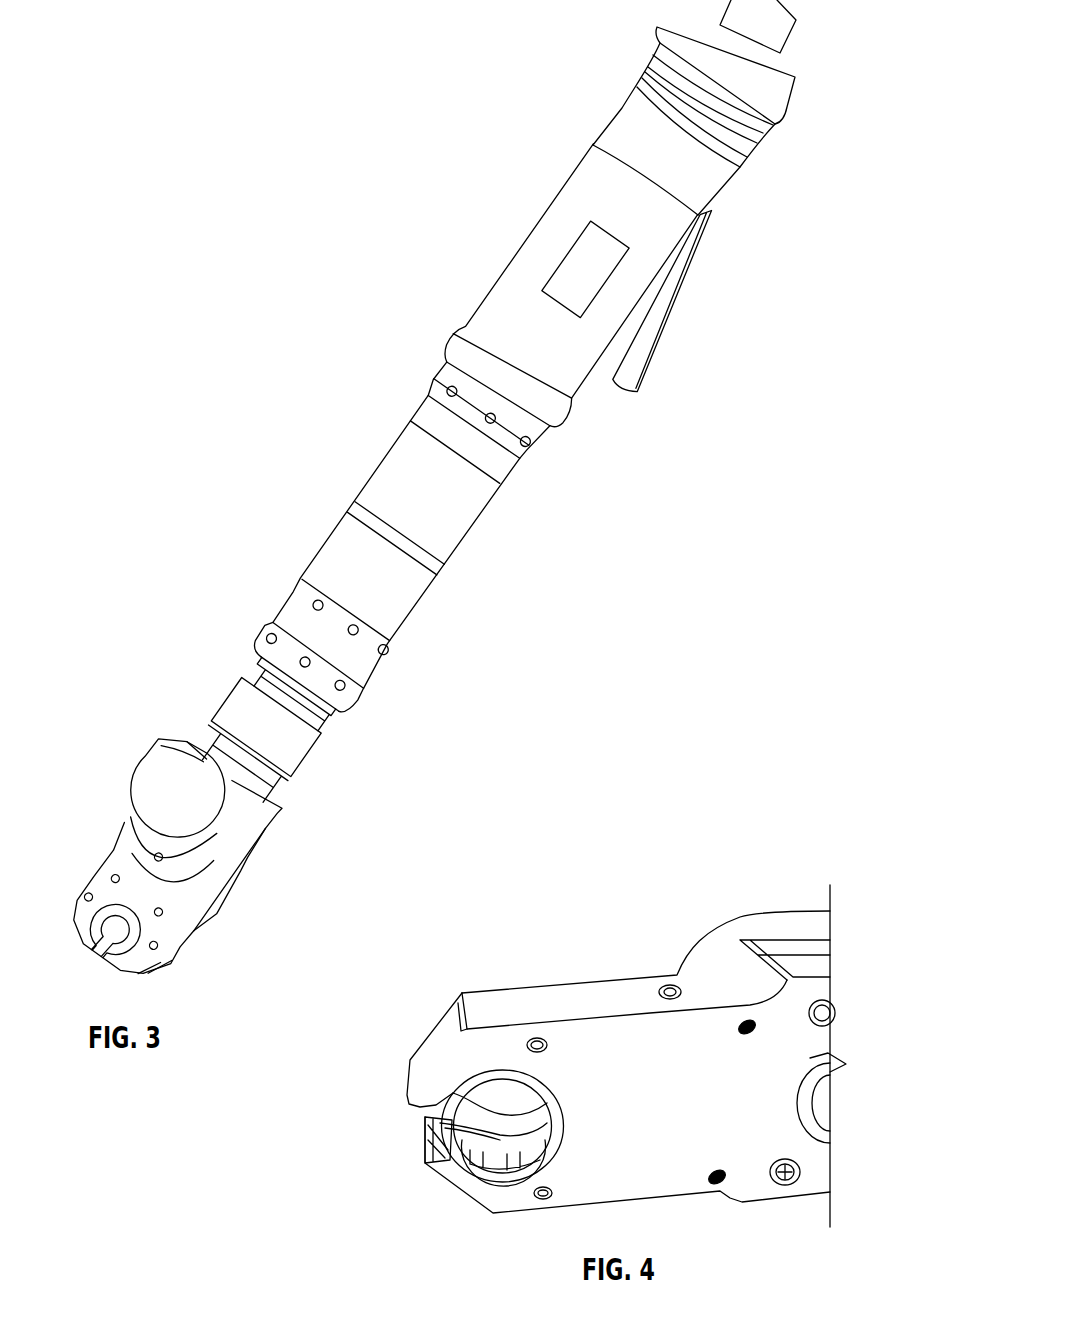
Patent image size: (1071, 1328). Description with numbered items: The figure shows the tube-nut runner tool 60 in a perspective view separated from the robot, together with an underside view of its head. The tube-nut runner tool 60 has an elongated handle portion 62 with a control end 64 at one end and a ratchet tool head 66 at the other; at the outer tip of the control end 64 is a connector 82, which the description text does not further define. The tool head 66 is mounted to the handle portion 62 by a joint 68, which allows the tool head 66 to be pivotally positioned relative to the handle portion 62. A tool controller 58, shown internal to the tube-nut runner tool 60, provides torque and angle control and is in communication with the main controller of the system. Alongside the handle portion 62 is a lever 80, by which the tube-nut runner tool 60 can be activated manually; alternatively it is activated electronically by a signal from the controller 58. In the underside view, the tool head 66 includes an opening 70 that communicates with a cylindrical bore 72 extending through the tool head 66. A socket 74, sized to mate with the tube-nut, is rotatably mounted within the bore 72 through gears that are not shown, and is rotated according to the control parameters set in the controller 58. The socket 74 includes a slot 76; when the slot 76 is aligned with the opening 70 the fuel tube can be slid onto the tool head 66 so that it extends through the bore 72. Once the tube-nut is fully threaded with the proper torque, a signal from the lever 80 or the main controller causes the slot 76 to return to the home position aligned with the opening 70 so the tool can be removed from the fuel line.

In FIG. 3, the tool controller 58 is at (566, 252).
In FIG. 3, the tube-nut runner tool 60 is at (562, 46).
In FIG. 3, the handle portion 62 is at (482, 520).
In FIG. 3, the control end 64 is at (732, 198).
In FIG. 3, the ratchet tool head 66 is at (232, 900).
In FIG. 4, the ratchet tool head 66 is at (582, 926).
In FIG. 3, the joint 68 is at (310, 757).
In FIG. 4, the opening 70 is at (428, 1116).
In FIG. 3, the cylindrical bore 72 is at (118, 940).
In FIG. 4, the cylindrical bore 72 is at (545, 1103).
In FIG. 4, the socket 74 is at (532, 1153).
In FIG. 4, the slot 76 is at (430, 1148).
In FIG. 3, the lever 80 is at (655, 318).
In FIG. 3, the connector 82 is at (777, 33).